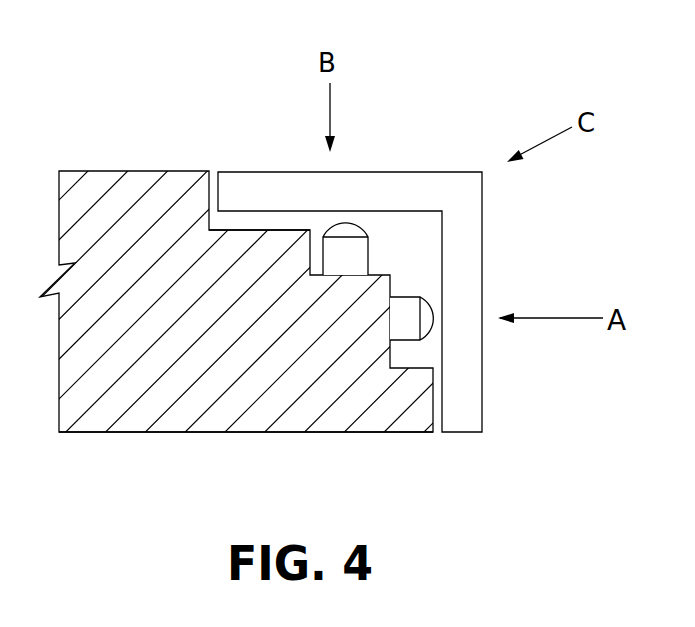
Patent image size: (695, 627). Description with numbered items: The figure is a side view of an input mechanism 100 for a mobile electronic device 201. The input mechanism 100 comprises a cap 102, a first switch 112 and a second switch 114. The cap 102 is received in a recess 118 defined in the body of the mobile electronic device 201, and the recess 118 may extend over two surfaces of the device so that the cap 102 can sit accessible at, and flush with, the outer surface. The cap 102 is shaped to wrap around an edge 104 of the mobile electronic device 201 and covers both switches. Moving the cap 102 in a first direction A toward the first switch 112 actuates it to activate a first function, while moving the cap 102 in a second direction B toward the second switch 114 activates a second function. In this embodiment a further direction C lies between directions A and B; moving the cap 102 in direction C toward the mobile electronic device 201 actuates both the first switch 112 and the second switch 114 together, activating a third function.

The input mechanism 100 is at (458, 128).
The cap 102 is at (482, 400).
The edge 104 is at (211, 181).
The first switch 112 is at (410, 297).
The second switch 114 is at (368, 255).
The recess 118 is at (253, 231).
The mobile electronic device 201 is at (230, 434).